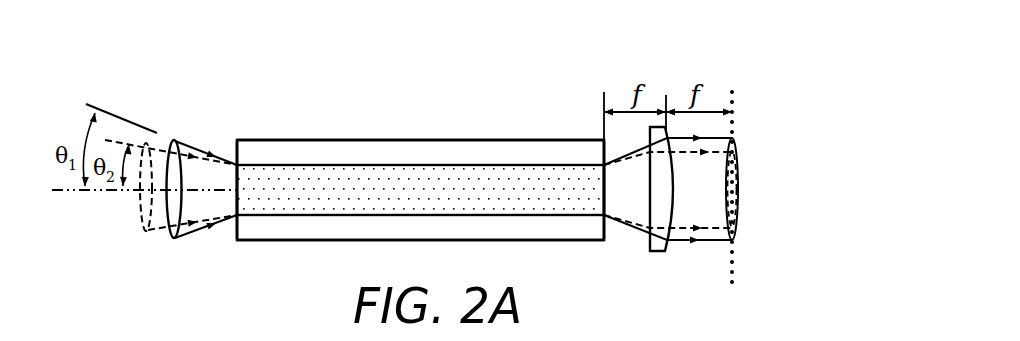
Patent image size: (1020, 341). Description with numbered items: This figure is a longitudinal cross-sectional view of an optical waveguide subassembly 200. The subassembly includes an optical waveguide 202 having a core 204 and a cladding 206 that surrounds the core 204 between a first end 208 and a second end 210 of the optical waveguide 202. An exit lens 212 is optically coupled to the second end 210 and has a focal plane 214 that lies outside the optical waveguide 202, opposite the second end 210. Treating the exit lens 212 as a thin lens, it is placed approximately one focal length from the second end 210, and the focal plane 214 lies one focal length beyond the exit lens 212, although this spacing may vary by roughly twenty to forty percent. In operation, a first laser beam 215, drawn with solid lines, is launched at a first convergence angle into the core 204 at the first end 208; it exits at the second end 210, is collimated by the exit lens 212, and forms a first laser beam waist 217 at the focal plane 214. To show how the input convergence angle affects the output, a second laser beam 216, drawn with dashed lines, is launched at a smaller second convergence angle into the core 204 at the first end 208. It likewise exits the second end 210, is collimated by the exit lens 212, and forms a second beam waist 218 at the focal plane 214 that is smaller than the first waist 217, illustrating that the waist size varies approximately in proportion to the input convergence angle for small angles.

The optical waveguide subassembly 200 is at (582, 59).
The optical waveguide 202 is at (342, 123).
The core 204 is at (422, 185).
The cladding 206 is at (498, 151).
The first end 208 is at (232, 203).
The second end 210 is at (605, 200).
The exit lens 212 is at (660, 252).
The focal plane 214 is at (732, 272).
The first laser beam 215 is at (170, 238).
The second laser beam 216 is at (147, 232).
The first laser beam waist 217 is at (731, 139).
The second beam waist 218 is at (738, 178).